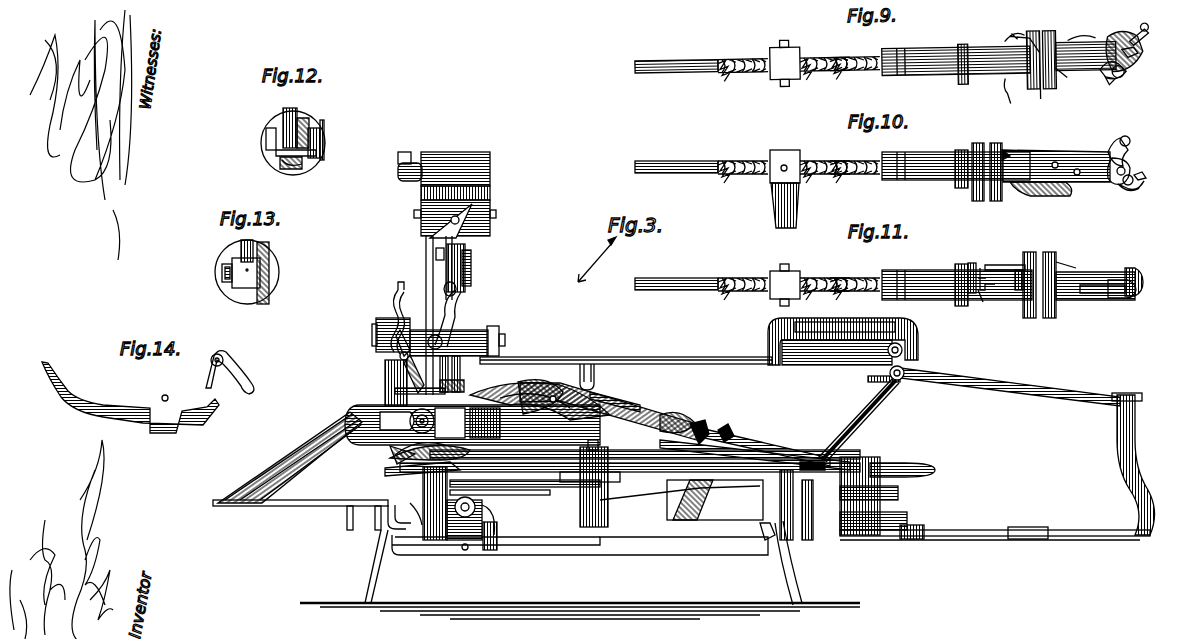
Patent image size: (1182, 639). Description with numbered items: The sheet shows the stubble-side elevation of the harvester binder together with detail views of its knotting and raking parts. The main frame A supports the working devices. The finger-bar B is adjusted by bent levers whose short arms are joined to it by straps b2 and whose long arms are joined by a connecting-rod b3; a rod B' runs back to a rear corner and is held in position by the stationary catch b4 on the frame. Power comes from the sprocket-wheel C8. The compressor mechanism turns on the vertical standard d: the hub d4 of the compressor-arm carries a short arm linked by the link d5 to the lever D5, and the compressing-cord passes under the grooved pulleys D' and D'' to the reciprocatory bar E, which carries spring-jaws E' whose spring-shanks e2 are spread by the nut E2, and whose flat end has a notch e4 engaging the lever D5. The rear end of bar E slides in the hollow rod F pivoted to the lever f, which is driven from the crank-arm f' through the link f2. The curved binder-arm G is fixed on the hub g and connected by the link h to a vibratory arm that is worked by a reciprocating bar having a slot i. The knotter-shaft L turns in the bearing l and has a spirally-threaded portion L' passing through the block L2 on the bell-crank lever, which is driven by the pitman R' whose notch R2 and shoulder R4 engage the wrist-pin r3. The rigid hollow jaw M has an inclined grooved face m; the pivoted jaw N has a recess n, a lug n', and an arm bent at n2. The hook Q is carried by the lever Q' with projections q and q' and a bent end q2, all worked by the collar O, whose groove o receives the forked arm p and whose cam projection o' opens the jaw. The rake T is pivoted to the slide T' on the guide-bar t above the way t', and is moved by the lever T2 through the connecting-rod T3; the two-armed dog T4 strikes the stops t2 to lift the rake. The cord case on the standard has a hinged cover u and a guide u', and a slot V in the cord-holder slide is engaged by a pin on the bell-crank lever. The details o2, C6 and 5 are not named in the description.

In FIG. 9, the rotary knotter-shaft L is at (681, 51).
In FIG. 10, the rotary knotter-shaft L is at (728, 156).
In FIG. 11, the rotary knotter-shaft L is at (730, 273).
In FIG. 9, the spirally-threaded portion L' is at (839, 56).
In FIG. 10, the spirally-threaded portion L' is at (840, 178).
In FIG. 11, the spirally-threaded portion L' is at (801, 294).
In FIG. 9, the block L2 is at (765, 55).
In FIG. 10, the block L2 is at (759, 189).
In FIG. 11, the block L2 is at (784, 272).
In FIG. 9, the collar O is at (1040, 45).
In FIG. 10, the collar O is at (956, 186).
In FIG. 11, the collar O is at (1045, 256).
In FIG. 12, the collar O is at (324, 150).
In FIG. 13, the collar O is at (257, 273).
In FIG. 9, the annular peripheral groove o is at (1044, 101).
In FIG. 9, the cam projection o' is at (1067, 78).
In FIG. 10, the cam projection o' is at (1003, 169).
In FIG. 11, the cam projection o' is at (1066, 252).
In FIG. 12, the cam projection o' is at (314, 119).
In FIG. 13, the cam projection o' is at (268, 271).
In FIG. 10, the collar o2 is at (982, 153).
In FIG. 9, the bent end n2 is at (966, 53).
In FIG. 11, the bent end n2 is at (1005, 260).
In FIG. 9, the pivoted jaw N is at (1100, 45).
In FIG. 10, the pivoted jaw N is at (1125, 190).
In FIG. 11, the pivoted jaw N is at (1078, 260).
In FIG. 12, the pivoted jaw N is at (312, 135).
In FIG. 12, the recess n is at (300, 171).
In FIG. 3, the recess n is at (402, 462).
In FIG. 9, the short arm or lug n' is at (1115, 85).
In FIG. 10, the short arm or lug n' is at (1147, 187).
In FIG. 3, the short arm or lug n' is at (415, 491).
In FIG. 9, the hook Q is at (1135, 41).
In FIG. 10, the hook Q is at (1133, 148).
In FIG. 11, the hook Q is at (1102, 309).
In FIG. 14, the hook Q is at (230, 372).
In FIG. 9, the lever Q' is at (1085, 44).
In FIG. 10, the lever Q' is at (1056, 181).
In FIG. 11, the lever Q' is at (1099, 291).
In FIG. 14, the lever Q' is at (130, 397).
In FIG. 14, the front projection q is at (190, 421).
In FIG. 10, the rear projection q' is at (1064, 201).
In FIG. 14, the rear projection q' is at (136, 437).
In FIG. 9, the bent rear end q2 is at (1013, 96).
In FIG. 11, the bent rear end q2 is at (987, 302).
In FIG. 14, the bent rear end q2 is at (56, 361).
In FIG. 9, the rigid hollow jaw M is at (1128, 76).
In FIG. 10, the rigid hollow jaw M is at (1140, 160).
In FIG. 11, the rigid hollow jaw M is at (1128, 288).
In FIG. 12, the rigid hollow jaw M is at (322, 138).
In FIG. 9, the inclined front side m is at (1130, 63).
In FIG. 10, the inclined front side m is at (1140, 178).
In FIG. 11, the inclined front side m is at (1154, 268).
In FIG. 12, the inclined front side m is at (266, 145).
In FIG. 11, the stops t2 is at (980, 266).
In FIG. 12, the stops t2 is at (283, 118).
In FIG. 3, the stops t2 is at (740, 384).
In FIG. 11, the rake T is at (834, 309).
In FIG. 3, the rake T is at (843, 341).
In FIG. 3, the slide T' is at (845, 339).
In FIG. 3, the lever T2 is at (1078, 530).
In FIG. 3, the connecting-rod T3 is at (912, 540).
In FIG. 3, the two-armed dog T4 is at (872, 380).
In FIG. 3, the guide-bar t is at (626, 350).
In FIG. 3, the way t' is at (907, 463).
In FIG. 3, the slot V is at (455, 176).
In FIG. 3, the hinged cover u is at (455, 185).
In FIG. 3, the guide u' is at (464, 268).
In FIG. 3, the vertical standard d is at (431, 315).
In FIG. 3, the hub d4 is at (389, 318).
In FIG. 3, the link d5 is at (398, 366).
In FIG. 3, the grooved pulley D' is at (451, 424).
In FIG. 3, the grooved pulley D'' is at (388, 371).
In FIG. 3, the lever D5 is at (385, 380).
In FIG. 3, the hub g is at (455, 315).
In FIG. 3, the link h is at (505, 340).
In FIG. 3, the curved binder-arm G is at (434, 382).
In FIG. 3, the notch e4 is at (540, 401).
In FIG. 3, the slot i is at (437, 421).
In FIG. 3, the reciprocatory bar E is at (609, 406).
In FIG. 3, the spring-jaws E' is at (760, 439).
In FIG. 3, the nut E2 is at (598, 397).
In FIG. 3, the spring-shanks e2 is at (670, 416).
In FIG. 3, the hollow rod F is at (755, 451).
In FIG. 3, the lever f is at (792, 477).
In FIG. 3, the crank-arm f' is at (858, 420).
In FIG. 3, the link or connecting-rod f2 is at (782, 438).
In FIG. 3, the block C6 is at (873, 520).
In FIG. 3, the sprocket-wheel C8 is at (898, 494).
In FIG. 3, the arm p is at (452, 461).
In FIG. 3, the pitman R' is at (645, 483).
In FIG. 3, the notch R2 is at (630, 469).
In FIG. 3, the shoulder R4 is at (525, 485).
In FIG. 3, the wrist-pin r3 is at (620, 485).
In FIG. 3, the finger-bar B is at (300, 471).
In FIG. 3, the rod B' is at (681, 500).
In FIG. 3, the straps b2 is at (398, 509).
In FIG. 3, the connecting-rod b3 is at (812, 542).
In FIG. 3, the stationary catch b4 is at (783, 563).
In FIG. 3, the main frame A is at (580, 574).
In FIG. 3, the bearing l is at (471, 518).
In FIG. 3, the pin 5 is at (492, 550).